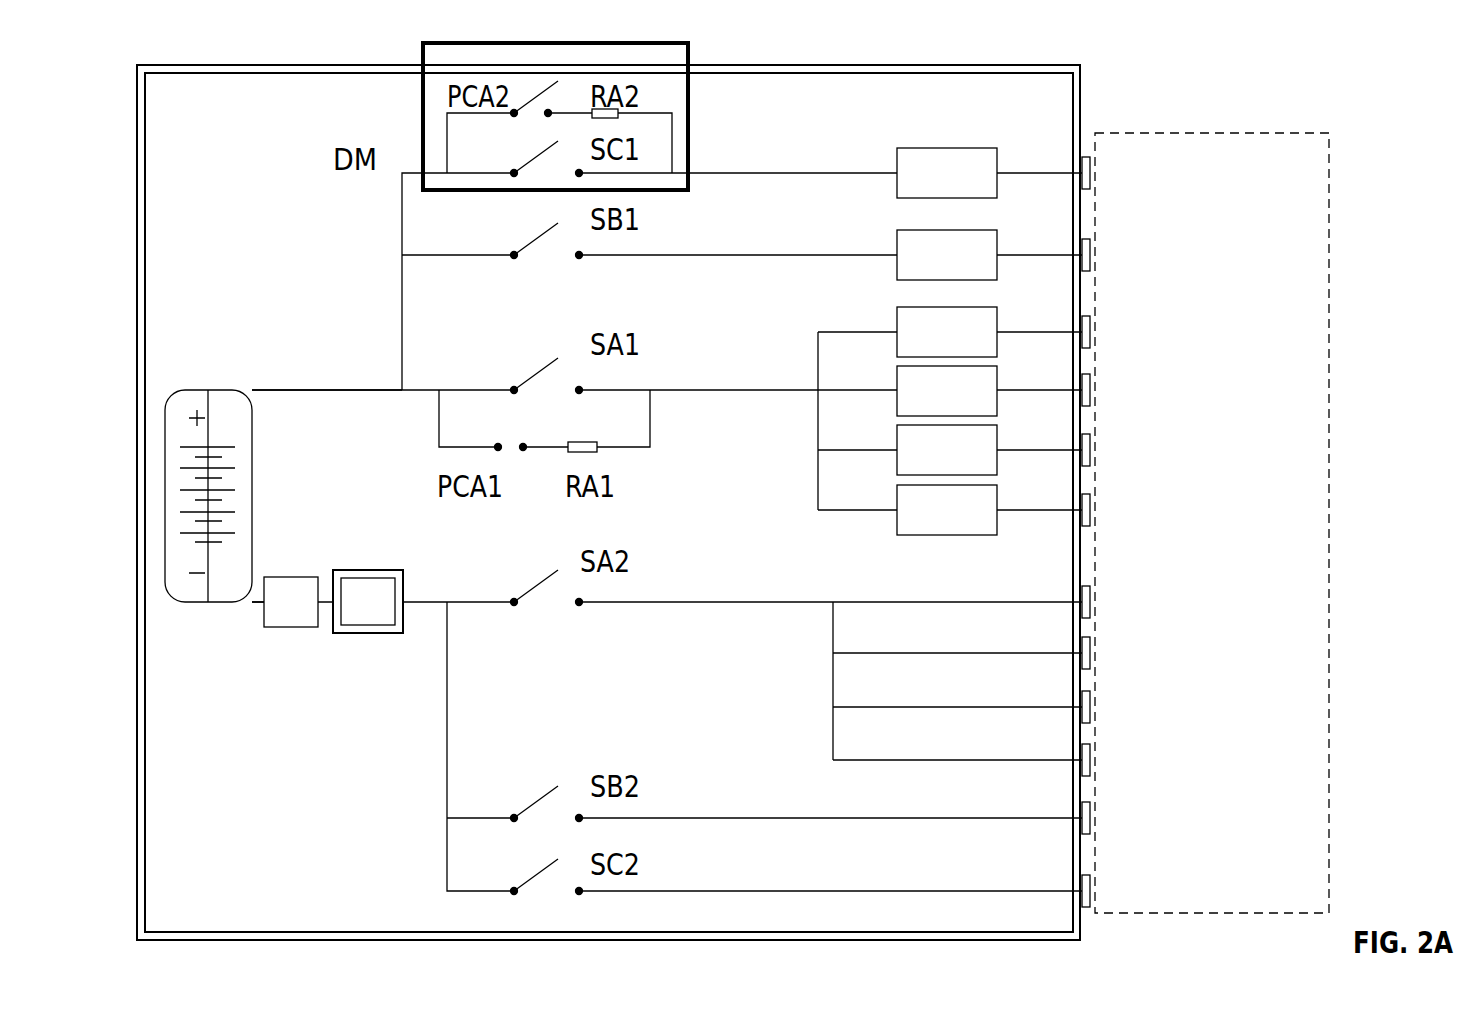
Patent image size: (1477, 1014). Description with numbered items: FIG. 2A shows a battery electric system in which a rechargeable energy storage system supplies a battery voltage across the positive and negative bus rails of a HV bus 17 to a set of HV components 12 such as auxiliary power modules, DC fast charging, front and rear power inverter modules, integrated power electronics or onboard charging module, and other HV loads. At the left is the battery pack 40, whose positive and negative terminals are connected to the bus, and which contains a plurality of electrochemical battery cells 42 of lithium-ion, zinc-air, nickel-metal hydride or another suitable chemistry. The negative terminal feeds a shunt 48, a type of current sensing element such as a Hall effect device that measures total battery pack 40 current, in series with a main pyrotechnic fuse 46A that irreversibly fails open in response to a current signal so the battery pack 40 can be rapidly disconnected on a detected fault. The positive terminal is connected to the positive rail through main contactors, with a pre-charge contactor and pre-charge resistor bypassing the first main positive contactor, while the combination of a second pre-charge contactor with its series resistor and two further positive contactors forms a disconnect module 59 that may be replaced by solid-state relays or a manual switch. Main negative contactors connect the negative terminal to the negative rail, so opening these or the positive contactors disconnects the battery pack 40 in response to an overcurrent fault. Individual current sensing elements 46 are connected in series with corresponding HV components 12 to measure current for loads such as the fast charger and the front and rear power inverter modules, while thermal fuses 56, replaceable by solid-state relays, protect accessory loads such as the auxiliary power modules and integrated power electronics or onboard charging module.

The HV components 12 is at (1330, 240).
The HV bus 17 is at (267, 407).
The battery pack 40 is at (152, 444).
The electrochemical battery cells 42 is at (165, 518).
The current sensing element 46 is at (897, 246).
The main pyrotechnic fuse 46A is at (360, 570).
The shunt 48 is at (267, 627).
The thermal fuse 56 is at (897, 168).
The disconnect module 59 is at (423, 128).